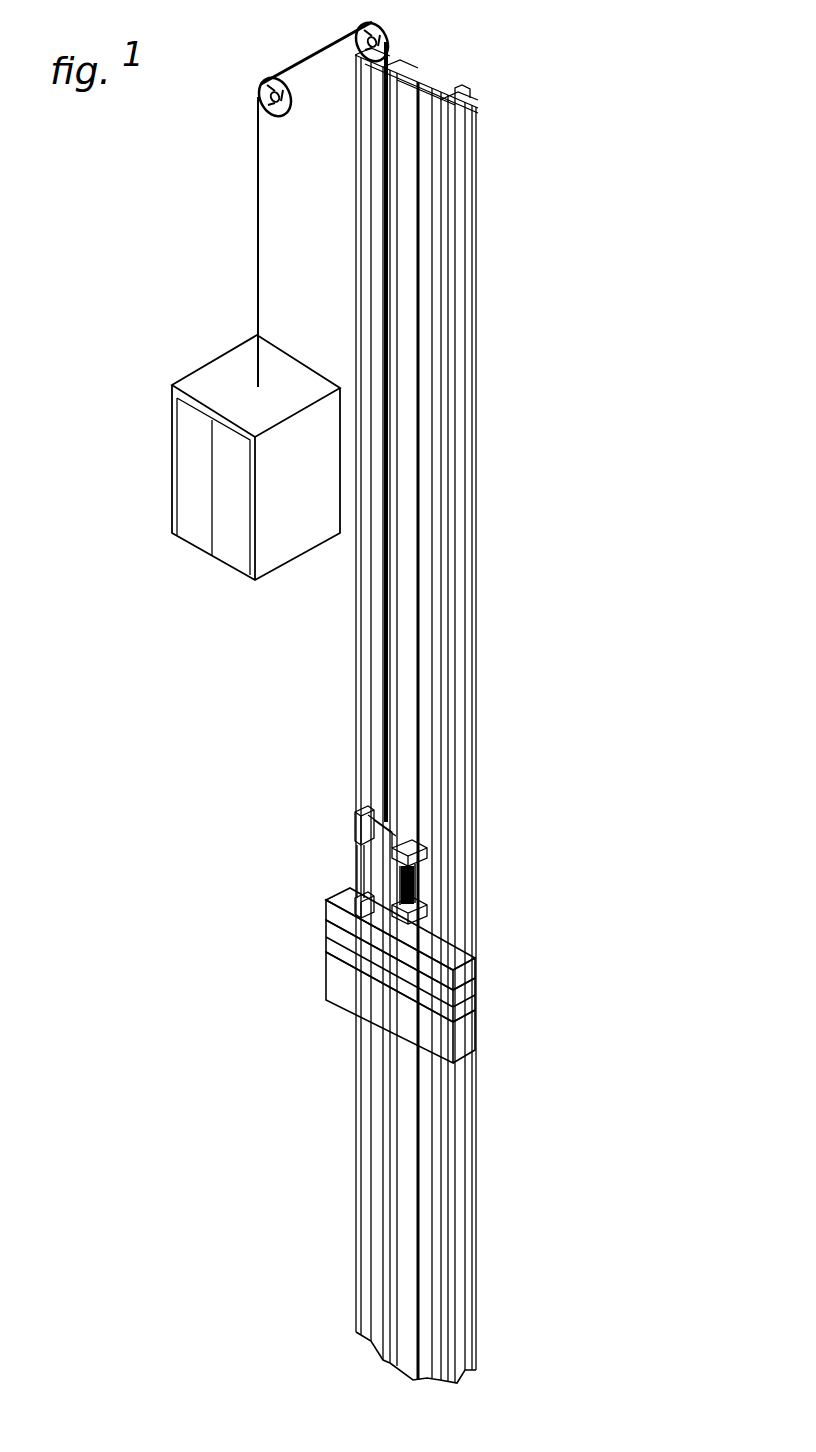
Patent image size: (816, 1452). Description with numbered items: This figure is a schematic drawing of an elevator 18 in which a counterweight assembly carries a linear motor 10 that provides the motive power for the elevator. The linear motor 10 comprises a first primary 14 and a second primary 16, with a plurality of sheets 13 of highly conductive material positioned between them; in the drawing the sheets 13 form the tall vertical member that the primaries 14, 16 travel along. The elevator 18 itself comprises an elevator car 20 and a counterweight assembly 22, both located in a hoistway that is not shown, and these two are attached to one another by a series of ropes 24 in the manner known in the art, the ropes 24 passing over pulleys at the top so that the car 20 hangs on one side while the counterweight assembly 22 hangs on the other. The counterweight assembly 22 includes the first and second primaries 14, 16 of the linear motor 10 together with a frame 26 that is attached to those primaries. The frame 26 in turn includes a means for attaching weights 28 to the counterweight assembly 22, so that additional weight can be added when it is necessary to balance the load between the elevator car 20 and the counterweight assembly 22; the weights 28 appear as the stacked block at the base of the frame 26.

The linear motor 10 is at (337, 855).
The sheets 13 is at (400, 86).
The first primary 14 is at (372, 868).
The second primary 16 is at (392, 812).
The elevator 18 is at (262, 793).
The elevator car 20 is at (193, 535).
The counterweight assembly 22 is at (320, 935).
The ropes 24 is at (302, 60).
The frame 26 is at (323, 965).
The weights 28 is at (340, 988).